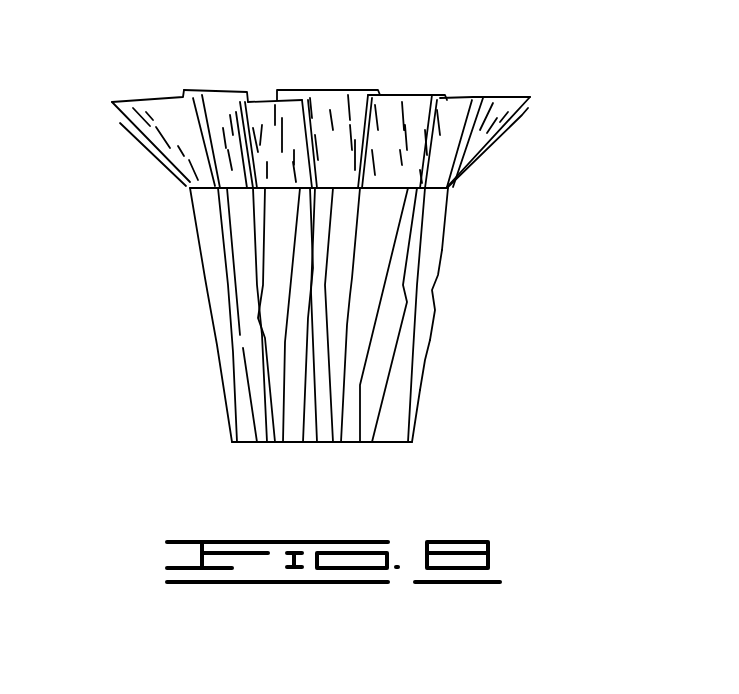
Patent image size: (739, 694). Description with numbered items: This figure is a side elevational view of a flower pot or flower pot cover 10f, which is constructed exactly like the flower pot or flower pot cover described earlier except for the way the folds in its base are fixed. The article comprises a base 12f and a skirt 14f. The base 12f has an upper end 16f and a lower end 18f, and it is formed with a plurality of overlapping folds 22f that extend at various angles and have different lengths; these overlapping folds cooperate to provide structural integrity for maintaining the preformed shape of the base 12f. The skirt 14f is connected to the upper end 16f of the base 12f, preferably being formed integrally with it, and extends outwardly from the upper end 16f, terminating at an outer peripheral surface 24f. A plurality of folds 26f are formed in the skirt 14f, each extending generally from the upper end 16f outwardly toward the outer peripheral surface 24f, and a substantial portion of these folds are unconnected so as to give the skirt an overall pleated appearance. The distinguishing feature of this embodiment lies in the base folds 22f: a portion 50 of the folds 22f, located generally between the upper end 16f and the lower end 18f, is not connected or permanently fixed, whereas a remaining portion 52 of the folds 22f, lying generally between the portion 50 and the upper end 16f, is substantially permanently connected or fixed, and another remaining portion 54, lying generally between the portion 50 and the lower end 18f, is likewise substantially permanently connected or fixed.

The flower pot or flower pot cover 10f is at (448, 258).
The base 12f is at (423, 370).
The skirt 14f is at (523, 132).
The upper end 16f is at (192, 185).
The lower end 18f is at (383, 445).
The overlapping folds 22f is at (250, 400).
The outer peripheral surface 24f is at (532, 96).
The folds 26f is at (233, 118).
The portion 50 is at (437, 308).
The remaining portion 52 is at (443, 213).
The another remaining portion 54 is at (417, 413).